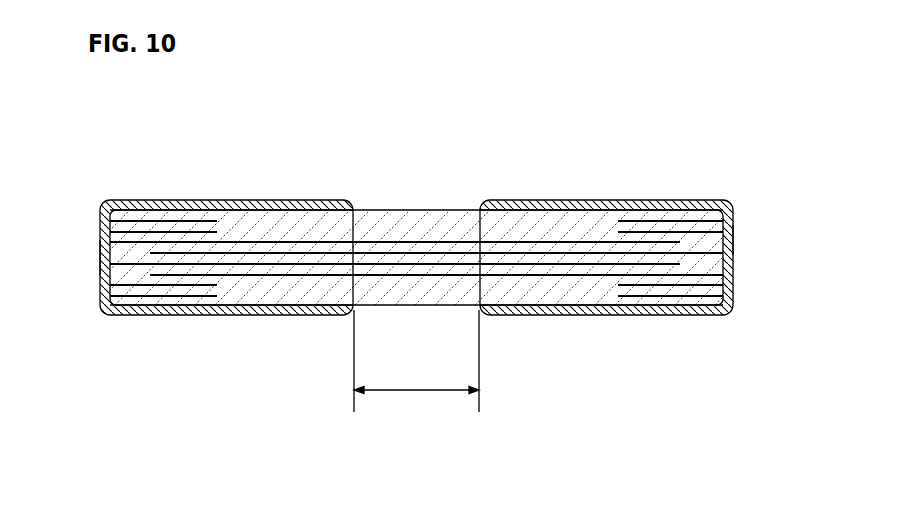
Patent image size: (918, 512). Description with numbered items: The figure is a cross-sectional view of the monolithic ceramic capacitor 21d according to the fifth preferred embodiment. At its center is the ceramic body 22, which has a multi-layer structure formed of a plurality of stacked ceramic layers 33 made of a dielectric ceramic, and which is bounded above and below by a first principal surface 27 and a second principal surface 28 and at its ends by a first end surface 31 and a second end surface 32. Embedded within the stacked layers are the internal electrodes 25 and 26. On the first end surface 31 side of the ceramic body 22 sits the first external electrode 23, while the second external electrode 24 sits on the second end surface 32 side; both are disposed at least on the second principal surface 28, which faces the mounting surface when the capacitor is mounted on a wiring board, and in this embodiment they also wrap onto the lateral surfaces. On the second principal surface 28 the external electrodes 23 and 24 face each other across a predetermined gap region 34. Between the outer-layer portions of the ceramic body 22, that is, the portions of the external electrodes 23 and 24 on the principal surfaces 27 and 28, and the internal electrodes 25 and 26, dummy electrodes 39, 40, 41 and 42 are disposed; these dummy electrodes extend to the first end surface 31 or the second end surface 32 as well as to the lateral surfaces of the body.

The monolithic ceramic capacitor 21d is at (271, 96).
The ceramic body 22 is at (428, 210).
The first external electrode 23 is at (101, 218).
The second external electrode 24 is at (729, 265).
The internal electrode 25 is at (298, 262).
The internal electrode 26 is at (583, 252).
The first principal surface 27 is at (381, 210).
The second principal surface 28 is at (423, 307).
The first end surface 31 is at (103, 253).
The second end surface 32 is at (731, 238).
The ceramic layer 33 is at (530, 262).
The gap region 34 is at (437, 392).
The dummy electrode 39 is at (183, 231).
The dummy electrode 40 is at (200, 284).
The dummy electrode 41 is at (665, 231).
The dummy electrode 42 is at (670, 284).